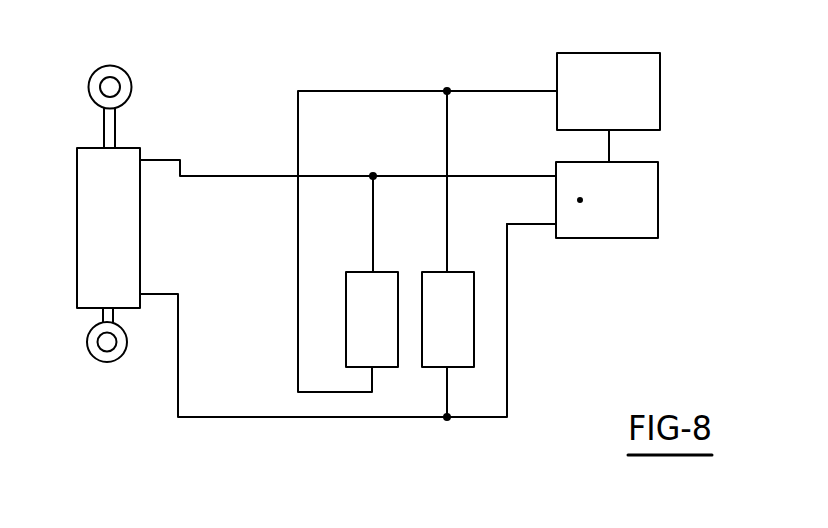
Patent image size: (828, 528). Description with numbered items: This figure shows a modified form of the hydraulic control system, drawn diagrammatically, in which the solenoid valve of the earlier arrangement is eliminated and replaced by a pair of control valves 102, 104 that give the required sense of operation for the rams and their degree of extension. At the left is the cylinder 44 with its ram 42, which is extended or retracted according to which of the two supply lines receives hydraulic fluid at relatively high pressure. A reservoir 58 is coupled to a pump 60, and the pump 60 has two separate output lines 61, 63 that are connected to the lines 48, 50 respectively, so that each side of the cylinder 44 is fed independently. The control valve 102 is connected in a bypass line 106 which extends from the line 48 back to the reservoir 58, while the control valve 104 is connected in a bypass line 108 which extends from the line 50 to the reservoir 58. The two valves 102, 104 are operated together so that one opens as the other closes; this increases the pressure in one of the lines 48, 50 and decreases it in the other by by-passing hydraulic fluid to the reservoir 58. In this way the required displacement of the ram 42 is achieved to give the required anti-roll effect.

The ram 42 is at (118, 123).
The cylinder 44 is at (108, 238).
The line 48 is at (233, 176).
The line 50 is at (228, 417).
The reservoir 58 is at (650, 97).
The pump 60 is at (625, 203).
The output line 61 is at (500, 176).
The output line 63 is at (532, 228).
The control valve 102 is at (367, 330).
The control valve 104 is at (455, 332).
The bypass line 106 is at (372, 218).
The bypass line 108 is at (447, 207).